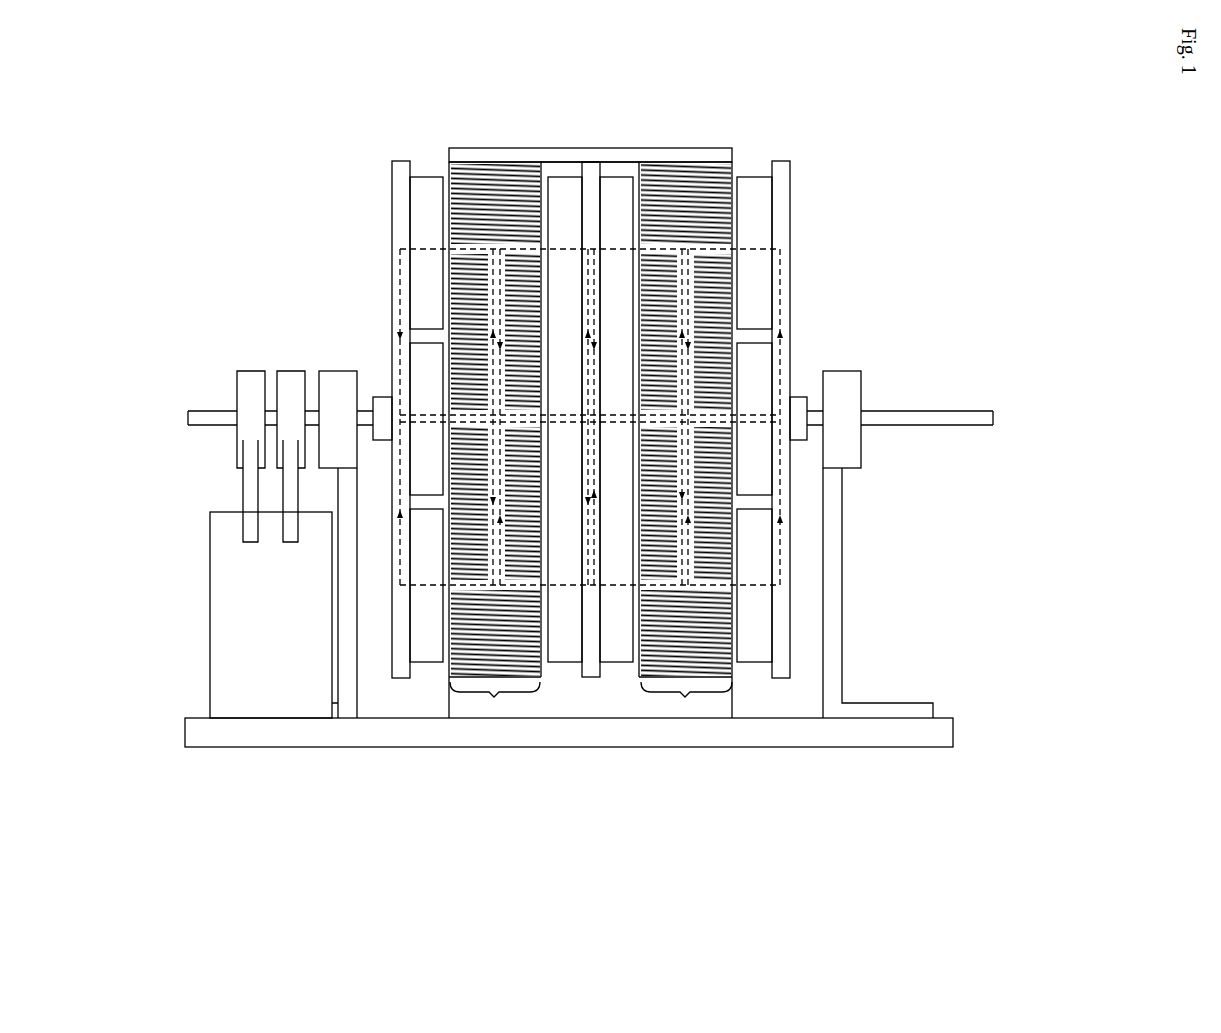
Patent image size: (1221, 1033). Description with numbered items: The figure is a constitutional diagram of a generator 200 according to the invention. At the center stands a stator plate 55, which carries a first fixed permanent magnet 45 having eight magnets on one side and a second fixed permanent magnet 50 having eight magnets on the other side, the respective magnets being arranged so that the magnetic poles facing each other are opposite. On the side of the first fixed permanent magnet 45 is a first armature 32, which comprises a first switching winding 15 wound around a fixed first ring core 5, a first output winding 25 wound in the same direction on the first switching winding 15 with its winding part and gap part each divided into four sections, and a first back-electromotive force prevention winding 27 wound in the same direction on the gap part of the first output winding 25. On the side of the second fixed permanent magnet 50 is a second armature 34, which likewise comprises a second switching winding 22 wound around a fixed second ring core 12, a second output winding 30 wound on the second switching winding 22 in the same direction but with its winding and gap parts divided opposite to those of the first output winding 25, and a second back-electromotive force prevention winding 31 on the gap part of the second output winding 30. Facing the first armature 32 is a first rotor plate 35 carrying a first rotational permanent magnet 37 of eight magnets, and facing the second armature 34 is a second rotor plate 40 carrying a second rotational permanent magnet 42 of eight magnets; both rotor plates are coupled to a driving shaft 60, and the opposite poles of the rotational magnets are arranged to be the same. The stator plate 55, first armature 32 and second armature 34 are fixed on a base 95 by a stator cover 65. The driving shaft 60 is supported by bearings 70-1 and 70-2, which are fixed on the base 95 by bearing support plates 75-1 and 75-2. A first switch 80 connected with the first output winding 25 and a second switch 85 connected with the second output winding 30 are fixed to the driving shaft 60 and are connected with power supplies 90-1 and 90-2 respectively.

The generator 200 is at (573, 846).
The first ring core 5 is at (497, 170).
The second ring core 12 is at (746, 373).
The first switching winding 15 is at (461, 380).
The first output winding 25 is at (461, 380).
The first back-electromotive force prevention winding 27 is at (461, 380).
The second switching winding 22 is at (746, 373).
The second output winding 30 is at (746, 373).
The second back-electromotive force prevention winding 31 is at (720, 160).
The first armature 32 is at (494, 698).
The second armature 34 is at (684, 698).
The first rotor plate 35 is at (398, 668).
The first rotational permanent magnet 37 is at (427, 654).
The second rotor plate 40 is at (782, 664).
The second rotational permanent magnet 42 is at (752, 653).
The first fixed permanent magnet 45 is at (565, 653).
The second fixed permanent magnet 50 is at (615, 178).
The stator plate 55 is at (588, 178).
The driving shaft 60 is at (953, 426).
The stator cover 65 is at (703, 155).
The bearing 70-1 is at (342, 371).
The bearing 70-2 is at (838, 371).
The bearing support plate 75-1 is at (350, 603).
The bearing support plate 75-2 is at (837, 548).
The first switch 80 is at (237, 364).
The second switch 85 is at (277, 364).
The power supply 90-1 is at (271, 615).
The power supply 90-2 is at (271, 615).
The base 95 is at (580, 735).